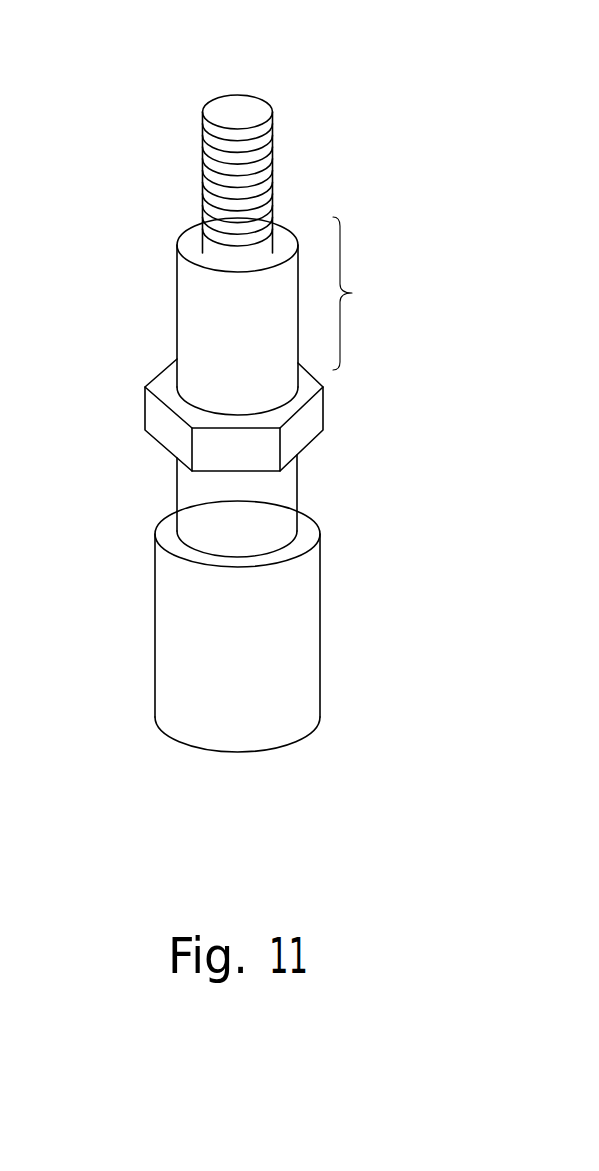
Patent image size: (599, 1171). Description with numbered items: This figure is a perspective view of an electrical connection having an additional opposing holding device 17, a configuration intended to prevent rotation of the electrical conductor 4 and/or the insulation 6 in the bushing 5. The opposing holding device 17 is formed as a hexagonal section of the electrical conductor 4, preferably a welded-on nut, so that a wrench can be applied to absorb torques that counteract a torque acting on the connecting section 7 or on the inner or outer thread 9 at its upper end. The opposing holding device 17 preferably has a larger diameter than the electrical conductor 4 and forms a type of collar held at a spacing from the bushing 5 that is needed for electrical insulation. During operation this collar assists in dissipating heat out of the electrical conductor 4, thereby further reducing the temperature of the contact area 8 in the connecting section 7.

The electrical conductor 4 is at (239, 110).
The thread 9 is at (280, 172).
The contact area 8 is at (193, 310).
The connecting section 7 is at (383, 287).
The opposing holding device 17 is at (325, 410).
The insulation 6 is at (312, 523).
The bushing 5 is at (322, 637).